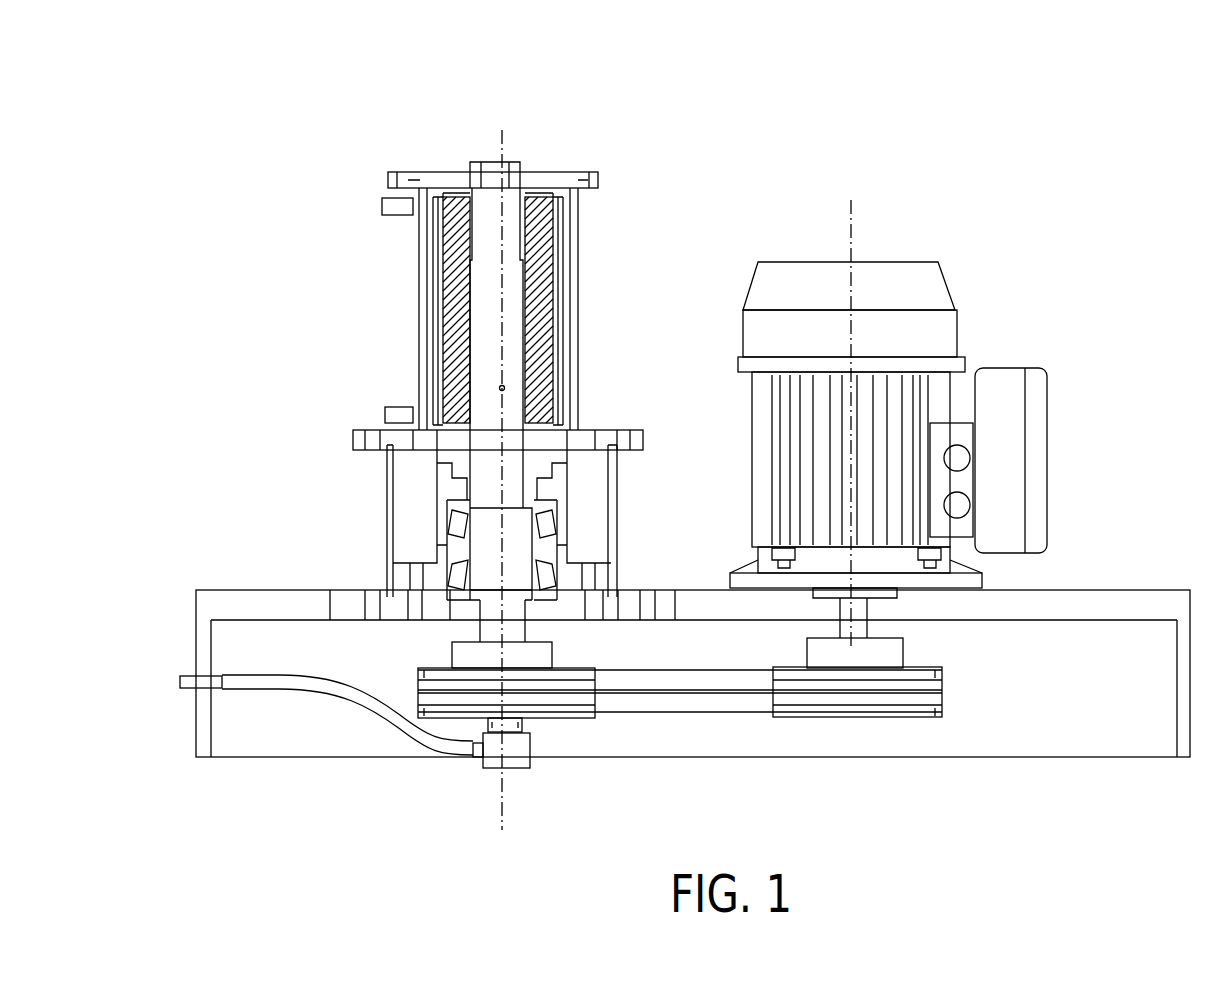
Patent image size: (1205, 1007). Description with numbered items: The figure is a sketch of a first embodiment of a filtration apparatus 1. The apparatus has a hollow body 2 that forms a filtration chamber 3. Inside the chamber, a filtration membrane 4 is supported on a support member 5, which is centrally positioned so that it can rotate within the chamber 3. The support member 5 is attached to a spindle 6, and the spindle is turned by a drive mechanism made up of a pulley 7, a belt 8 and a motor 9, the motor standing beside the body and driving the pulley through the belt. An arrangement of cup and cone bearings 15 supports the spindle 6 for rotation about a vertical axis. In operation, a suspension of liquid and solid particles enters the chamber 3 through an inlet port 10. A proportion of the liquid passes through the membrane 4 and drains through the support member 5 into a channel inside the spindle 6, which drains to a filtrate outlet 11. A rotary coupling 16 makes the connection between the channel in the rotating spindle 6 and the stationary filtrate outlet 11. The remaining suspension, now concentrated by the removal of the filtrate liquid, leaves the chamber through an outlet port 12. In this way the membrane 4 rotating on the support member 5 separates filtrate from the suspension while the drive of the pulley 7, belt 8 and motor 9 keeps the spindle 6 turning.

The filtration apparatus 1 is at (668, 100).
The hollow body 2 is at (573, 295).
The filtration chamber 3 is at (555, 203).
The filtration membrane 4 is at (442, 268).
The support member 5 is at (575, 238).
The spindle 6 is at (512, 354).
The pulley 7 is at (552, 720).
The belt 8 is at (682, 708).
The motor 9 is at (923, 288).
The inlet port 10 is at (398, 415).
The filtrate outlet 11 is at (187, 680).
The outlet port 12 is at (380, 205).
The cup and cone bearings 15 is at (447, 573).
The rotary coupling 16 is at (497, 757).